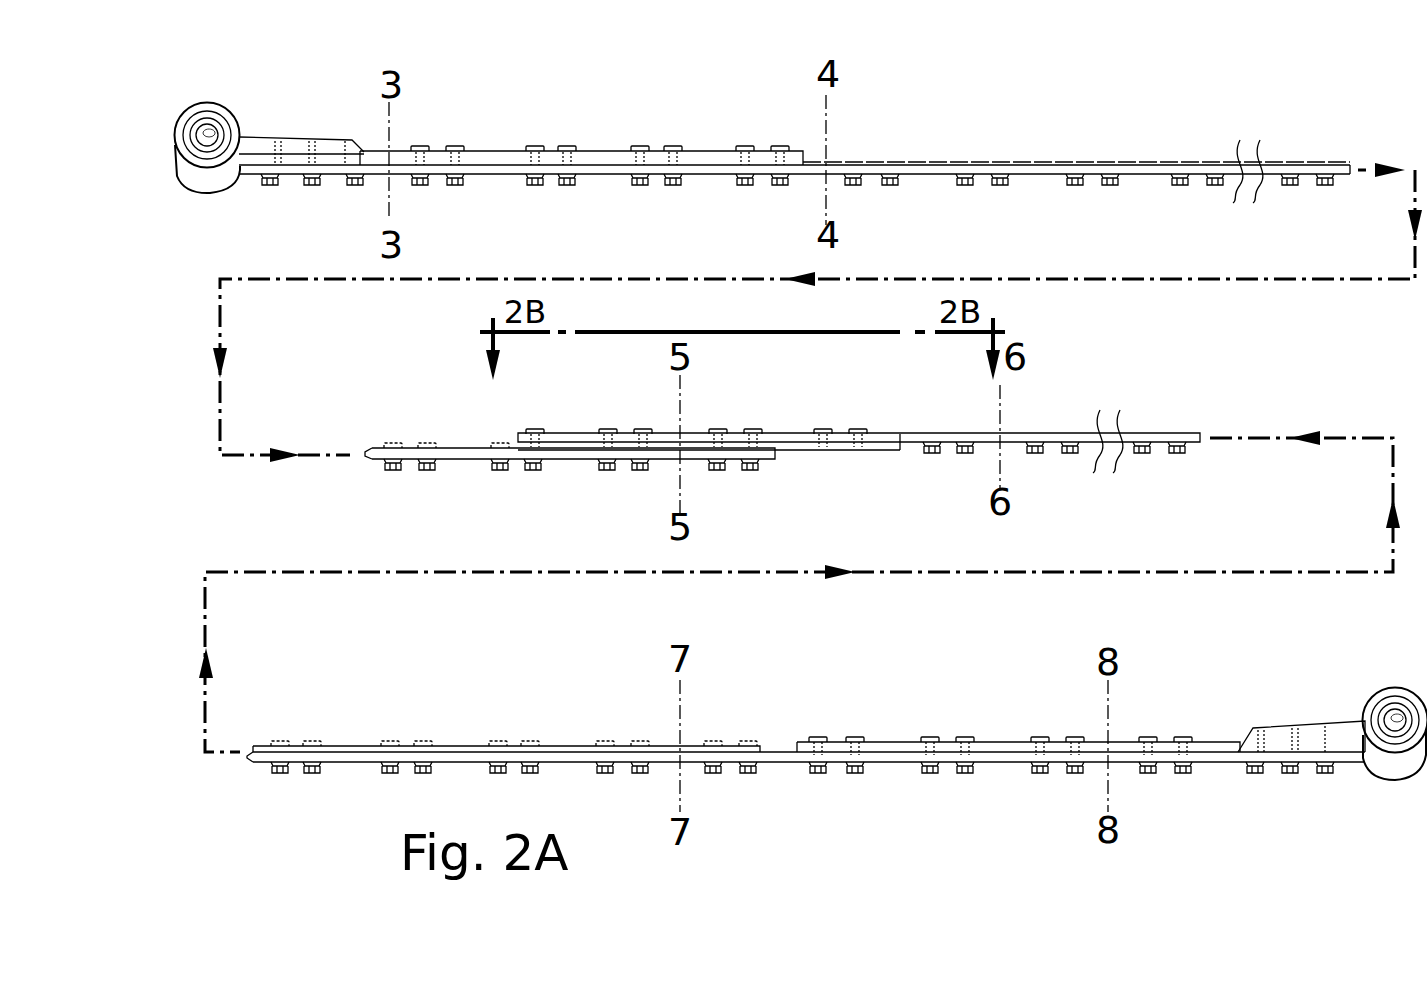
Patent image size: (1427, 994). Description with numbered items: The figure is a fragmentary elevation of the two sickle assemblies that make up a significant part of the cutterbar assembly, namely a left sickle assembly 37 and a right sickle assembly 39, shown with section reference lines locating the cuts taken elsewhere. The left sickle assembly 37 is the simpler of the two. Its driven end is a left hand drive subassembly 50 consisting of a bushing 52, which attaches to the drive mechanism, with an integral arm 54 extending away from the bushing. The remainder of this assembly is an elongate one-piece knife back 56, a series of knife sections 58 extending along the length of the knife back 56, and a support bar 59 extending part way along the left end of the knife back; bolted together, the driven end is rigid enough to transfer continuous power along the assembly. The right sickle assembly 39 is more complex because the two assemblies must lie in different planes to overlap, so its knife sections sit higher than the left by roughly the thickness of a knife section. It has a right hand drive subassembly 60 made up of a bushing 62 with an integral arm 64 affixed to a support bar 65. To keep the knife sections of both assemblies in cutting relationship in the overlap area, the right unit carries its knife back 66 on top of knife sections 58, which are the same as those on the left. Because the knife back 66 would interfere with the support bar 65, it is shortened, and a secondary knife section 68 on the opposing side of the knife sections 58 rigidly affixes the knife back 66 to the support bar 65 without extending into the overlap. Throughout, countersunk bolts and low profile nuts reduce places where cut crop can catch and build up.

The left sickle assembly 37 is at (900, 132).
The right sickle assembly 39 is at (622, 729).
The left hand drive subassembly 50 is at (313, 123).
The bushing 52 is at (214, 104).
The integral arm 54 is at (248, 142).
The knife back 56 is at (940, 178).
The knife sections 58 is at (1046, 162).
The support bar 59 is at (601, 155).
The right hand drive subassembly 60 is at (1265, 702).
The bushing 62 is at (1401, 690).
The integral arm 64 is at (1341, 727).
The support bar 65 is at (1129, 742).
The knife back 66 is at (1021, 432).
The secondary knife section 68 is at (781, 763).